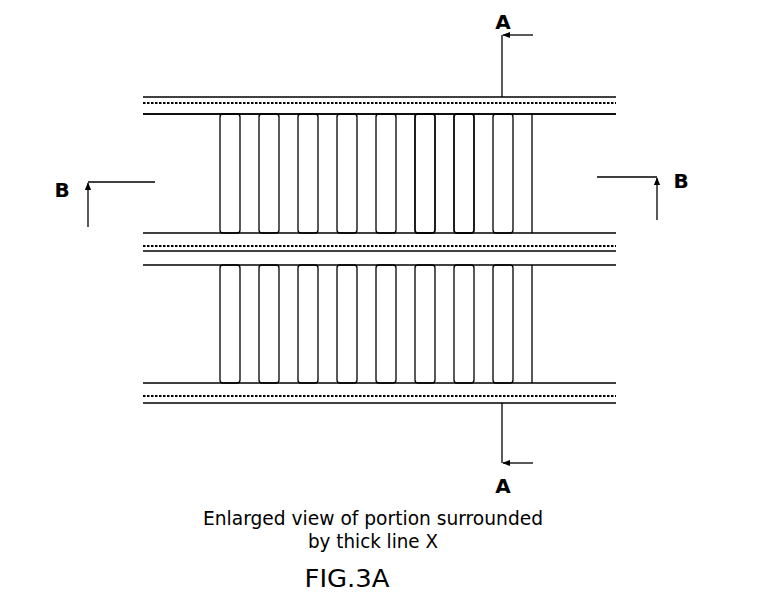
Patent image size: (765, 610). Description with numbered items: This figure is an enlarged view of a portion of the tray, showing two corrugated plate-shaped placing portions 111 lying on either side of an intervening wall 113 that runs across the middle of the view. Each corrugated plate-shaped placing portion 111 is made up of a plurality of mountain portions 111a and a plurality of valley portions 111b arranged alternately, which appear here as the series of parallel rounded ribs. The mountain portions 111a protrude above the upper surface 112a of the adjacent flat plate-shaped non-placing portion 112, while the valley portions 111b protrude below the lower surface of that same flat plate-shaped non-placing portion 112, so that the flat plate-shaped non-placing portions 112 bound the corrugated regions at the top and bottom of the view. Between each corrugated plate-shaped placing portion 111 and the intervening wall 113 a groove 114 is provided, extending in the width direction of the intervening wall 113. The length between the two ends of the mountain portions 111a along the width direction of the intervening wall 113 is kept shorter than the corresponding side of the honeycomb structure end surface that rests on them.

The corrugated plate-shaped placing portion 111 is at (368, 125).
The mountain portion 111a is at (466, 128).
The valley portion 111b is at (408, 127).
The flat plate-shaped non-placing portion 112 is at (163, 131).
The upper surface 112a is at (205, 127).
The intervening wall 113 is at (165, 249).
The groove 114 is at (291, 112).